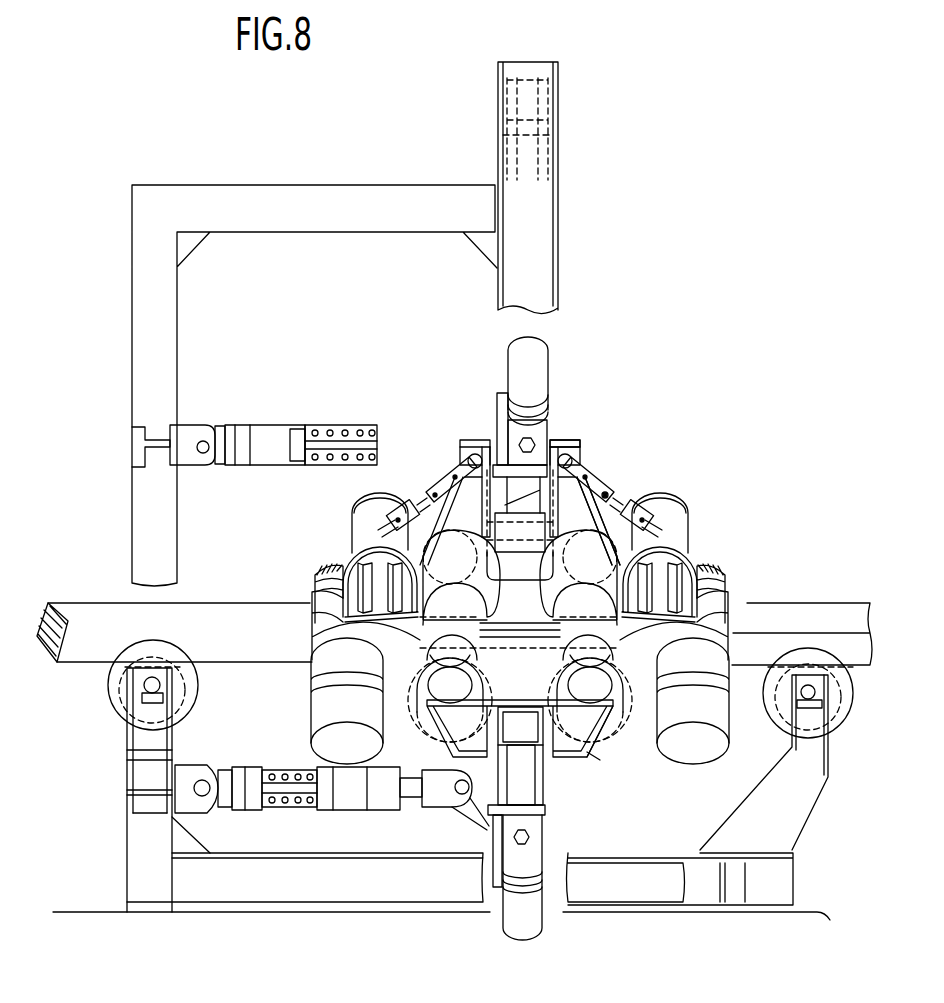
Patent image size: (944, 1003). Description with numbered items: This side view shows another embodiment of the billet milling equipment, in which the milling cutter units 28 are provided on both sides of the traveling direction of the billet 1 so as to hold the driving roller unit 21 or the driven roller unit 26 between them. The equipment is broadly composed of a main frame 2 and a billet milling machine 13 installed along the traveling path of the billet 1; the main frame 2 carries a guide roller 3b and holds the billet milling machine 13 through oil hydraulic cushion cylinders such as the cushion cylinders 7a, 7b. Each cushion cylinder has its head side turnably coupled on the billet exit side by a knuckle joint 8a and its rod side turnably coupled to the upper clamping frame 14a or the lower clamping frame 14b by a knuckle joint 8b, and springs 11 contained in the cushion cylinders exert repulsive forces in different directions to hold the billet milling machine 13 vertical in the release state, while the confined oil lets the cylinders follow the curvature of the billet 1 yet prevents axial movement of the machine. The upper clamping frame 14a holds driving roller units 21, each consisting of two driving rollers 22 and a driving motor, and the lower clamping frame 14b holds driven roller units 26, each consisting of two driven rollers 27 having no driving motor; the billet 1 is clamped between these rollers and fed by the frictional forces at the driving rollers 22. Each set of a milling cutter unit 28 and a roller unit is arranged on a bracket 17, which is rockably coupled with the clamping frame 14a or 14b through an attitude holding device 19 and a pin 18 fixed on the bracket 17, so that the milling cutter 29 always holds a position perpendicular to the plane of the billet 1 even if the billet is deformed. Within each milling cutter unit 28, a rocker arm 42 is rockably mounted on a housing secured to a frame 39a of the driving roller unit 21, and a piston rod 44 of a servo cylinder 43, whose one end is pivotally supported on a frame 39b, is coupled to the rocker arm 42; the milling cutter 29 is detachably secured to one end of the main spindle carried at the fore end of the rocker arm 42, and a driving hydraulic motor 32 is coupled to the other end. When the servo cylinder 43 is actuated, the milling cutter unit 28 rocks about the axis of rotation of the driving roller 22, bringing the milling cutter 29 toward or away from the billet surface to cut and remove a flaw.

The billet 1 is at (37, 625).
The main frame 2 is at (360, 205).
The guide roller 3b is at (110, 712).
The driving hydraulic motor 32 is at (845, 698).
The cushion cylinder 7a is at (262, 425).
The cushion cylinder 7b is at (260, 810).
The knuckle joint 8a is at (208, 468).
The knuckle joint 8b is at (452, 808).
The spring 11 is at (335, 432).
The billet milling machine 13 is at (462, 440).
The upper clamping frame 14a is at (490, 400).
The lower clamping frame 14b is at (540, 800).
The bracket 17 is at (585, 445).
The pin 18 is at (600, 455).
The attitude holding device 19 is at (540, 372).
The driving roller unit 21 is at (443, 700).
The driving roller 22 is at (672, 552).
The driven roller unit 26 is at (613, 740).
The driven roller 27 is at (618, 714).
The milling cutter unit 28 is at (311, 702).
The milling cutter 29 is at (318, 572).
The frame of the driving roller unit 39a is at (620, 490).
The frame 39b is at (600, 760).
The rocker arm 42 is at (420, 688).
The servo cylinder 43 is at (440, 455).
The piston rod 44 is at (418, 492).